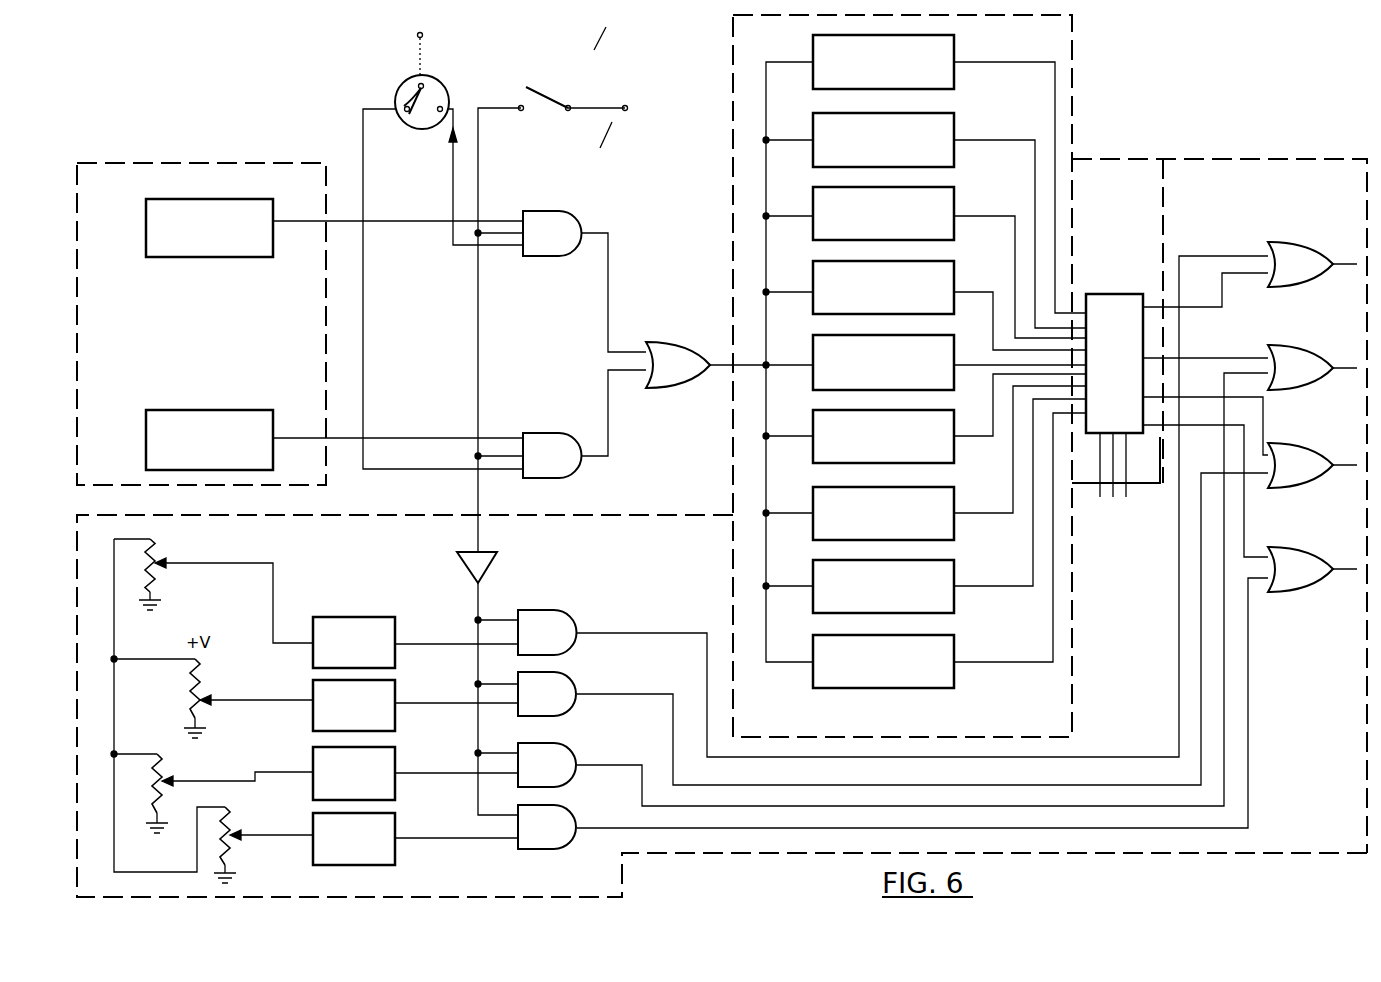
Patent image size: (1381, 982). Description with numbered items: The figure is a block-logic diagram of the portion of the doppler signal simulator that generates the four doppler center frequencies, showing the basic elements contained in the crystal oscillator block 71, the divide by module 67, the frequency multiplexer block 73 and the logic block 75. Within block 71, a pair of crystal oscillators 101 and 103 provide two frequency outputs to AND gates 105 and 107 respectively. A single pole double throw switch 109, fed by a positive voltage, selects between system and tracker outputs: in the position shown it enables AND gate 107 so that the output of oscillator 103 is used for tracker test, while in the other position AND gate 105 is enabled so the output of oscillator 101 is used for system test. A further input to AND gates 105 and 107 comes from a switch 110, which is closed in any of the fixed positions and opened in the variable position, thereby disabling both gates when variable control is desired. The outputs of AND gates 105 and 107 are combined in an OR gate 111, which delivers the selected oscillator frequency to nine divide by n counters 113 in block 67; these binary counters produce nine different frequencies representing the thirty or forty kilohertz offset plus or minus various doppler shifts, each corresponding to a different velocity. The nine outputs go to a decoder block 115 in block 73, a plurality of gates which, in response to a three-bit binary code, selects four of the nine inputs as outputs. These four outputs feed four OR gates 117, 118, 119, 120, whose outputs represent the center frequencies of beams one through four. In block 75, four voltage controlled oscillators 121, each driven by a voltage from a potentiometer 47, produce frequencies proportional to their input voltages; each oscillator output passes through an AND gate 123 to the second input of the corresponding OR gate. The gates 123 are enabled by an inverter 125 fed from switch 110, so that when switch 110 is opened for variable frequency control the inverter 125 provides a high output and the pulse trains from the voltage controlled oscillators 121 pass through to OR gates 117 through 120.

The potentiometer 47 is at (160, 541).
The divide by module 67 is at (1078, 68).
The crystal oscillator block 71 is at (198, 163).
The frequency multiplexer block 73 is at (1100, 159).
The logic block 75 is at (75, 668).
The crystal oscillator 101 is at (228, 257).
The crystal oscillator 103 is at (232, 410).
The AND gate 105 is at (555, 212).
The AND gate 107 is at (548, 433).
The single pole double throw switch 109 is at (403, 88).
The switch 110 is at (558, 100).
The OR gate 111 is at (668, 342).
The divide by n counters 113 is at (957, 72).
The decoder block 115 is at (1103, 294).
The OR gate 117 is at (1277, 242).
The OR gate 118 is at (1277, 345).
The OR gate 119 is at (1296, 488).
The OR gate 120 is at (1300, 592).
The voltage controlled oscillator 121 is at (393, 620).
The AND gate 123 is at (558, 612).
The inverter 125 is at (488, 550).